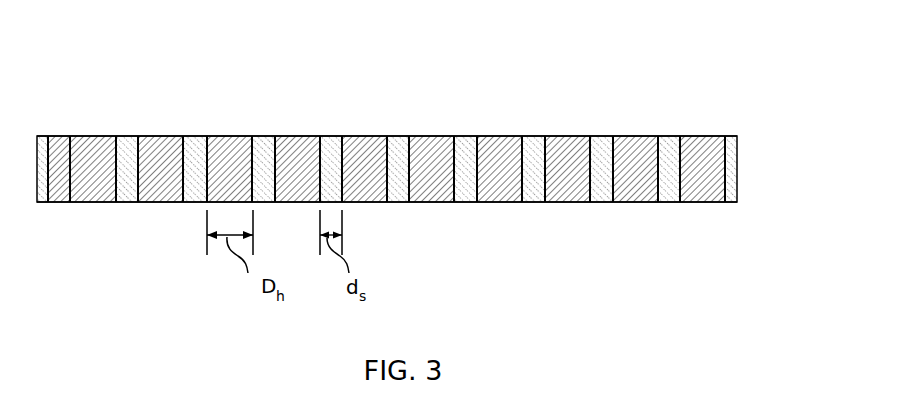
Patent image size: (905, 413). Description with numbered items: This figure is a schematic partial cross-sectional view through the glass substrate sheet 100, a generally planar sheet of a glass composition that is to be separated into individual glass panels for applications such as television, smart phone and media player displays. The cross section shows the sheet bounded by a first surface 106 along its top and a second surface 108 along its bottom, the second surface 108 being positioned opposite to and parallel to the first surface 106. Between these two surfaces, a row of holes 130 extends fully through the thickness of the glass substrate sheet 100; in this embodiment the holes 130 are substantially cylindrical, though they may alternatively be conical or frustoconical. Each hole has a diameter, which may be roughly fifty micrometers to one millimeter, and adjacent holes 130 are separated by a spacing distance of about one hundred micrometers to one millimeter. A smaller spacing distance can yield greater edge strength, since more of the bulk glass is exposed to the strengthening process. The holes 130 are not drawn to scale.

The glass substrate sheet 100 is at (512, 90).
The first surface 106 is at (703, 135).
The second surface 108 is at (705, 204).
The holes 130 is at (167, 135).